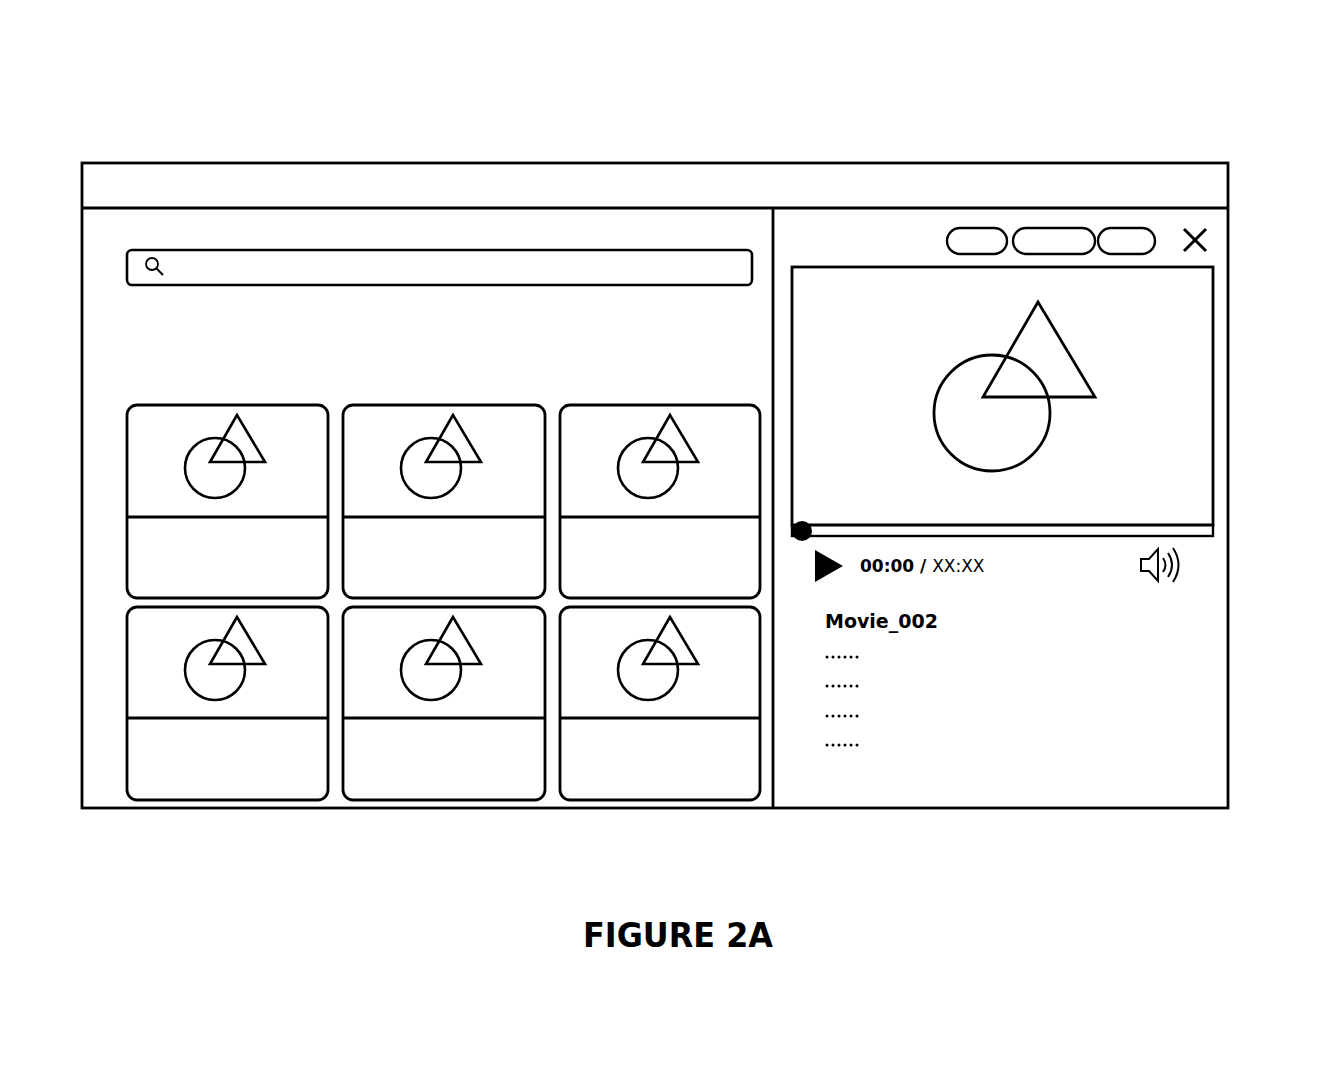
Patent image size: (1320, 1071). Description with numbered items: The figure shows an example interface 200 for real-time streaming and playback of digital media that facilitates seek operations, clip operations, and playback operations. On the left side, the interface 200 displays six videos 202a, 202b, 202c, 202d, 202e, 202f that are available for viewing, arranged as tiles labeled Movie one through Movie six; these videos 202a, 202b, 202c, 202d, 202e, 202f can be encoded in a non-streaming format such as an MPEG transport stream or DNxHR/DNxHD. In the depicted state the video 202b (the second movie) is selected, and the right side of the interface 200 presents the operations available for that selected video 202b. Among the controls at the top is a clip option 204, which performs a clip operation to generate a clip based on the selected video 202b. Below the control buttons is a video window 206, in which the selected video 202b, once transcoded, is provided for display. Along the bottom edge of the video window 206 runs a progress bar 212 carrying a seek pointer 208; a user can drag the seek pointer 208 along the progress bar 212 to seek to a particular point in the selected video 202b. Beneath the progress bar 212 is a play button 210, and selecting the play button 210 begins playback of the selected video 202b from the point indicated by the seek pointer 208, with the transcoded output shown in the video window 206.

The interface 200 is at (168, 74).
The video 202a is at (220, 403).
The video 202b is at (403, 403).
The video 202c is at (638, 405).
The video 202d is at (210, 806).
The video 202e is at (410, 806).
The video 202f is at (613, 806).
The clip option 204 is at (1157, 229).
The video window 206 is at (1176, 329).
The seek pointer 208 is at (806, 519).
The play button 210 is at (838, 548).
The progress bar 212 is at (1155, 517).